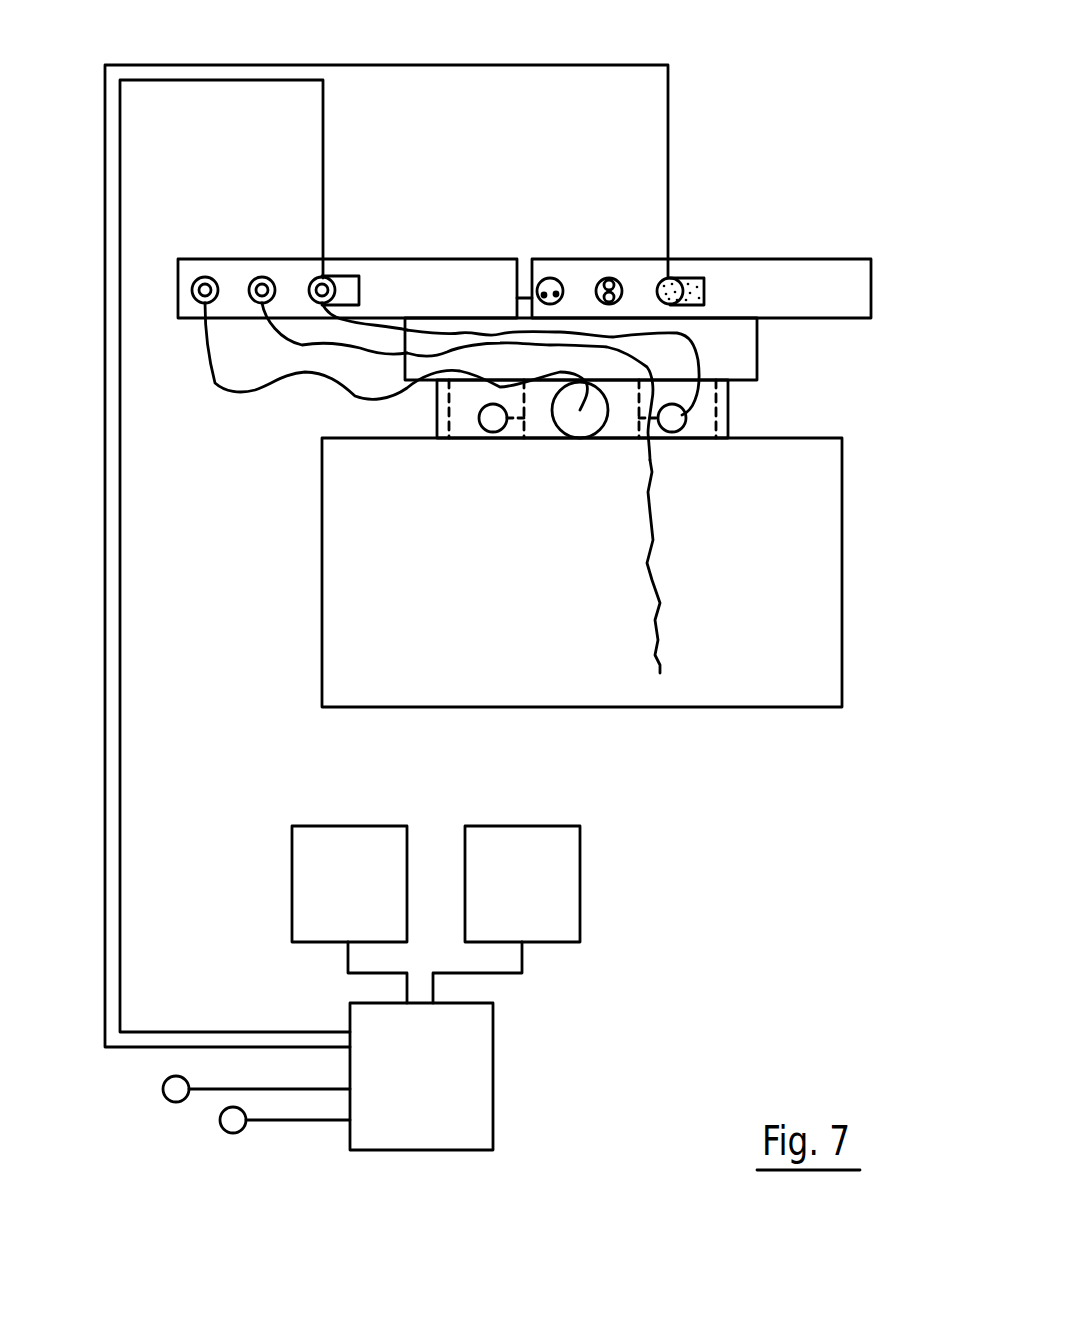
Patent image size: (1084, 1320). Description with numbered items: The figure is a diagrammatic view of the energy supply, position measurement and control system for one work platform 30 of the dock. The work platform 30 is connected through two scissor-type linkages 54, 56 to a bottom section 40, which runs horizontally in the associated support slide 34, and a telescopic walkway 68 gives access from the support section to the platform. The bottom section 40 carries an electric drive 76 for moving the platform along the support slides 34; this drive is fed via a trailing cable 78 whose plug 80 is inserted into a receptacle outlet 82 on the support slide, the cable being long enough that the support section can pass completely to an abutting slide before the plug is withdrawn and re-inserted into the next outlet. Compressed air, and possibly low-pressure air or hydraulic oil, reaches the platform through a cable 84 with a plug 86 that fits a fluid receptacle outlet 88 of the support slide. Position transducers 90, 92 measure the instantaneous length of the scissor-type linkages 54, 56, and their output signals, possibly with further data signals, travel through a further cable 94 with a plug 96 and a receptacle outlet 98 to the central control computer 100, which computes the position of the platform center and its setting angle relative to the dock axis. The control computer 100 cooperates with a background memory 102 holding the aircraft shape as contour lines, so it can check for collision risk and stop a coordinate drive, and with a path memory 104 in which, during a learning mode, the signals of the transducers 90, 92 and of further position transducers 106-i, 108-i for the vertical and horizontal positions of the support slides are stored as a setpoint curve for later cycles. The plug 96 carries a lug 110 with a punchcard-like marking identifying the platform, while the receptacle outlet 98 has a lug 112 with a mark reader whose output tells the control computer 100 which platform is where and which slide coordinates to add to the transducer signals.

The work platform 30 is at (828, 480).
The support slide 34 is at (237, 277).
The bottom section 40 is at (735, 343).
The scissor-type linkage 54 is at (723, 433).
The scissor-type linkage 56 is at (452, 427).
The telescopic walkway 68 is at (730, 430).
The electric drive 76 is at (602, 417).
The cable 78 is at (215, 383).
The plug 80 is at (208, 277).
The receptacle outlet 82 is at (557, 277).
The cable 84 is at (660, 603).
The plug 86 is at (253, 277).
The fluid receptacle outlet 88 is at (602, 277).
The position transducer 90 is at (493, 432).
The position transducer 92 is at (667, 432).
The cable 94 is at (313, 317).
The plug 96 is at (313, 280).
The receptacle outlet 98 is at (673, 277).
The central control computer 100 is at (418, 1125).
The background memory 102 is at (353, 852).
The path memory 104 is at (528, 848).
The position transducer 106-i is at (167, 1100).
The position transducer 108-i is at (233, 1130).
The lug 110 is at (343, 277).
The lug 112 is at (740, 350).